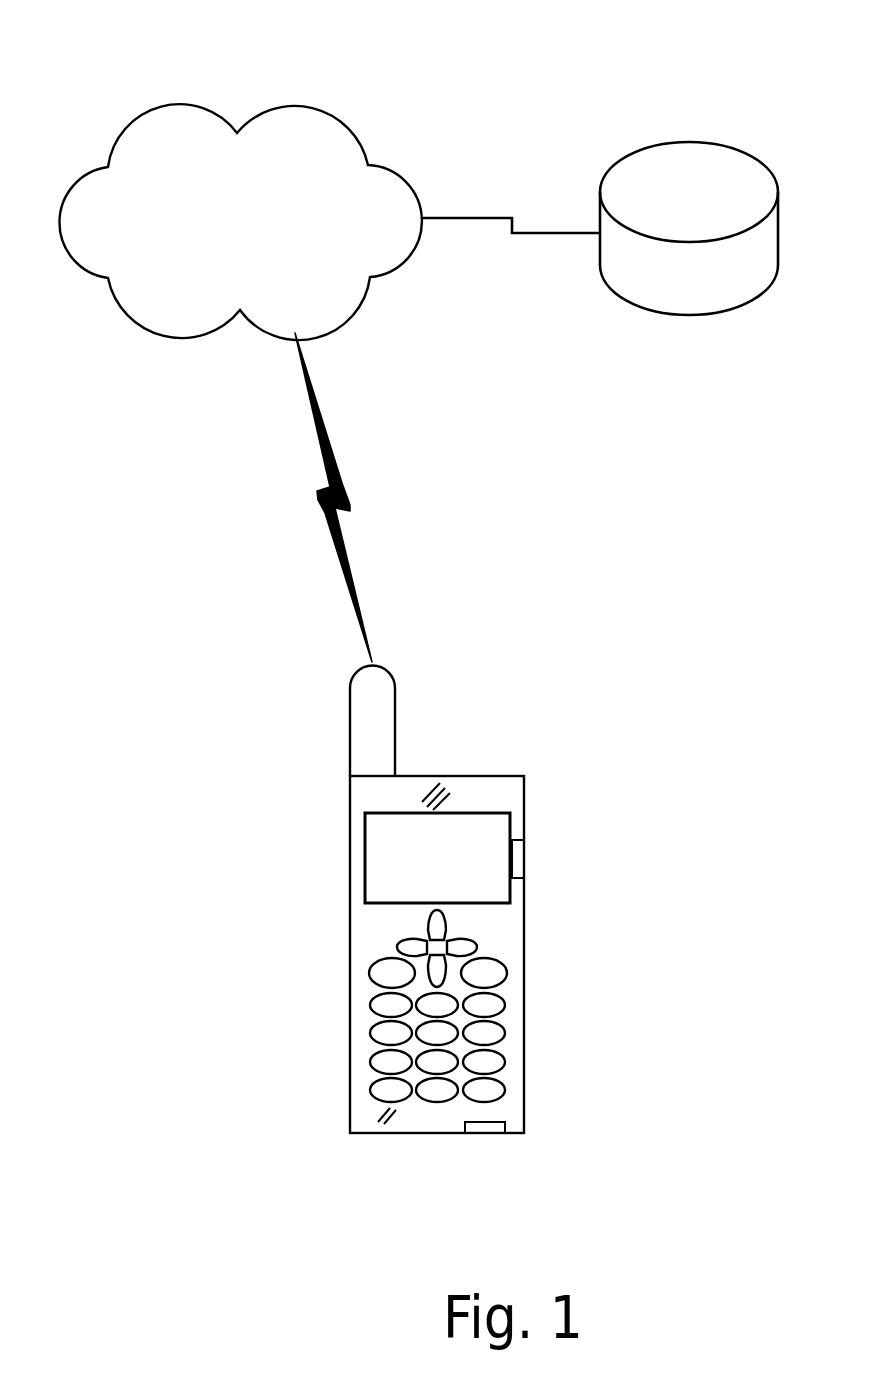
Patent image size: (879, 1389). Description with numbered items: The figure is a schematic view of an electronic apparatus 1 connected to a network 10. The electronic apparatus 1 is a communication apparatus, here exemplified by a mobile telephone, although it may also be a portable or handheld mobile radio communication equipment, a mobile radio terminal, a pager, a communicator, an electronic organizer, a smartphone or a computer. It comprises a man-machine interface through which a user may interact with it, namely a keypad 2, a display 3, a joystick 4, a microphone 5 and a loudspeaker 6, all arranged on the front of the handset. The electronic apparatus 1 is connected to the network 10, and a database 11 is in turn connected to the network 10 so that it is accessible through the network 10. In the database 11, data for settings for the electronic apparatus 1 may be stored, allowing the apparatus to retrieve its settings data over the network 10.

The electronic apparatus 1 is at (585, 835).
The keypad 2 is at (487, 1036).
The display 3 is at (370, 850).
The joystick 4 is at (455, 945).
The microphone 5 is at (383, 1125).
The loudspeaker 6 is at (448, 792).
The network 10 is at (288, 108).
The database 11 is at (705, 317).